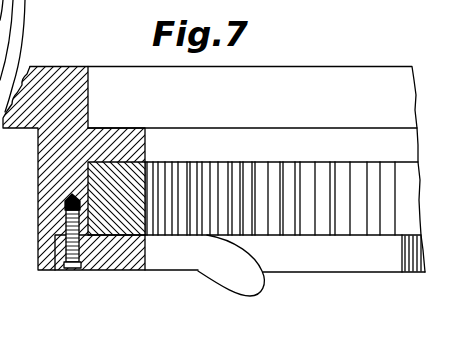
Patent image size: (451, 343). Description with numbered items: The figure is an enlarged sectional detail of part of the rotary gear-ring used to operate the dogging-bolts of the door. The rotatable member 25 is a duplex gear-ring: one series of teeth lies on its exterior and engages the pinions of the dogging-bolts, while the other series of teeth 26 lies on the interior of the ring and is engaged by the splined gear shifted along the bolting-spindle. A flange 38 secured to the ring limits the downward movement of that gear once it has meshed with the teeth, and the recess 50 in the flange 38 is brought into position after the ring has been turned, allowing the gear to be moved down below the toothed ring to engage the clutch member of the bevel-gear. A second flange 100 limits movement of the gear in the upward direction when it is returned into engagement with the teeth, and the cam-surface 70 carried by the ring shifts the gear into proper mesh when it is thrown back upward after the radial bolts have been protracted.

The rotatable member 25 is at (38, 200).
The series of teeth 26 is at (253, 173).
The flange 38 is at (117, 270).
The recess 50 is at (317, 262).
The cam-surface 70 is at (247, 260).
The flange 100 is at (160, 137).